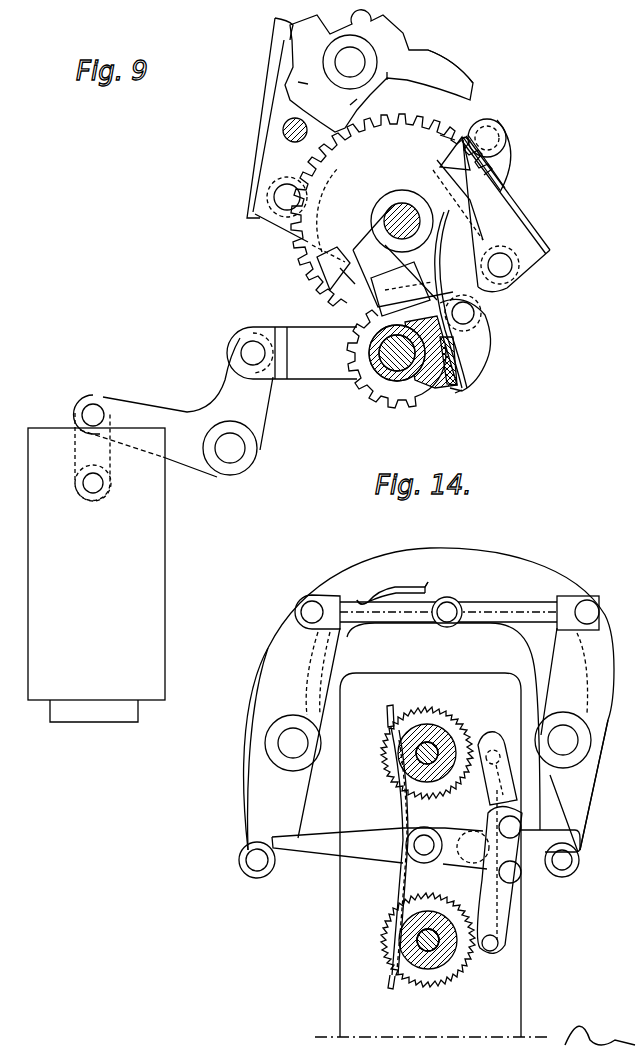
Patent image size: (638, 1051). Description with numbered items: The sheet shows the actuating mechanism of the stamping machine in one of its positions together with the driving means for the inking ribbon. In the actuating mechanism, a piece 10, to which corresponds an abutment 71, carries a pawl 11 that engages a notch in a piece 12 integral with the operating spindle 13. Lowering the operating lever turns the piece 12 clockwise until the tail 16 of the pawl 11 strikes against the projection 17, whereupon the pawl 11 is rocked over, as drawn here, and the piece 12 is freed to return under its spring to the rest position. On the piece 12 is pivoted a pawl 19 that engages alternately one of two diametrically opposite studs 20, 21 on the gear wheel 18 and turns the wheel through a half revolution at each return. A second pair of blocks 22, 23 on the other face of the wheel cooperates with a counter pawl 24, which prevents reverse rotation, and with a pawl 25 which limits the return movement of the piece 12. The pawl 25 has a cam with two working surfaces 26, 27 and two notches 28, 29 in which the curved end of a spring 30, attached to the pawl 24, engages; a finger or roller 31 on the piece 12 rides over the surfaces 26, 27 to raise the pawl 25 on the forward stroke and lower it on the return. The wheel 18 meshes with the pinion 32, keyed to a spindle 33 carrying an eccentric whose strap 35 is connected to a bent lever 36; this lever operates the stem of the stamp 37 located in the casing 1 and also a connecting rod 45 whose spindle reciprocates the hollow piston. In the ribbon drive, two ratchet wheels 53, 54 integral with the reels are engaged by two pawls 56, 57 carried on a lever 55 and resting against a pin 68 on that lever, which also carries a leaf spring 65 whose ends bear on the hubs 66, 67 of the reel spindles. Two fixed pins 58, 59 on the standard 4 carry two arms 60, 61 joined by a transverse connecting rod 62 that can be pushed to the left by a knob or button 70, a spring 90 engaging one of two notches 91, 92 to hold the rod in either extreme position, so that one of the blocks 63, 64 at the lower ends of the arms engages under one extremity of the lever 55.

In FIG. 14, the casing 1 is at (431, 830).
In FIG. 14, the basic framework or standard 4 is at (429, 700).
In FIG. 9, the piece 10 is at (433, 299).
In FIG. 9, the pawl 11 is at (389, 306).
In FIG. 9, the piece 12 is at (403, 256).
In FIG. 9, the operating spindle 13 is at (388, 216).
In FIG. 9, the tail 16 is at (484, 352).
In FIG. 9, the projection 17 is at (458, 392).
In FIG. 9, the gear wheel 18 is at (391, 210).
In FIG. 9, the pawl 19 is at (482, 220).
In FIG. 9, the stud or block 20 is at (338, 262).
In FIG. 9, the stud or block 21 is at (446, 163).
In FIG. 9, the block or stud 22 is at (362, 283).
In FIG. 9, the block or stud 23 is at (440, 134).
In FIG. 9, the counter pawl 24 is at (262, 210).
In FIG. 9, the pawl 25 is at (444, 68).
In FIG. 9, the working surface 26 is at (397, 67).
In FIG. 9, the working surface 27 is at (345, 106).
In FIG. 9, the notch 28 is at (309, 84).
In FIG. 9, the notch 29 is at (296, 42).
In FIG. 9, the spring 30 is at (268, 128).
In FIG. 9, the finger or roller 31 is at (506, 135).
In FIG. 9, the pinion 32 is at (377, 397).
In FIG. 9, the spindle 33 is at (445, 337).
In FIG. 9, the strap 35 is at (292, 353).
In FIG. 9, the bent lever 36 is at (174, 407).
In FIG. 9, the stamp 37 is at (94, 711).
In FIG. 9, the connecting rod 45 is at (92, 483).
In FIG. 14, the ratchet wheel 53 is at (428, 706).
In FIG. 14, the ratchet wheel 54 is at (395, 913).
In FIG. 14, the lever 55 is at (379, 848).
In FIG. 14, the pawl 56 is at (500, 797).
In FIG. 14, the pawl 57 is at (512, 918).
In FIG. 14, the fixed pin 58 is at (563, 740).
In FIG. 14, the fixed pin 59 is at (293, 743).
In FIG. 14, the arm 60 is at (587, 751).
In FIG. 14, the arm 61 is at (279, 749).
In FIG. 14, the transverse connecting rod 62 is at (400, 619).
In FIG. 14, the stud or block 63 is at (567, 858).
In FIG. 14, the stud or block 64 is at (256, 858).
In FIG. 14, the leaf spring 65 is at (400, 803).
In FIG. 14, the hub 66 is at (405, 751).
In FIG. 14, the hub 67 is at (408, 945).
In FIG. 14, the pin 68 is at (473, 847).
In FIG. 14, the knob or button 70 is at (447, 612).
In FIG. 9, the abutment 71 is at (295, 142).
In FIG. 14, the spring 90 is at (398, 588).
In FIG. 14, the notch 91 is at (365, 598).
In FIG. 14, the notch 92 is at (424, 590).